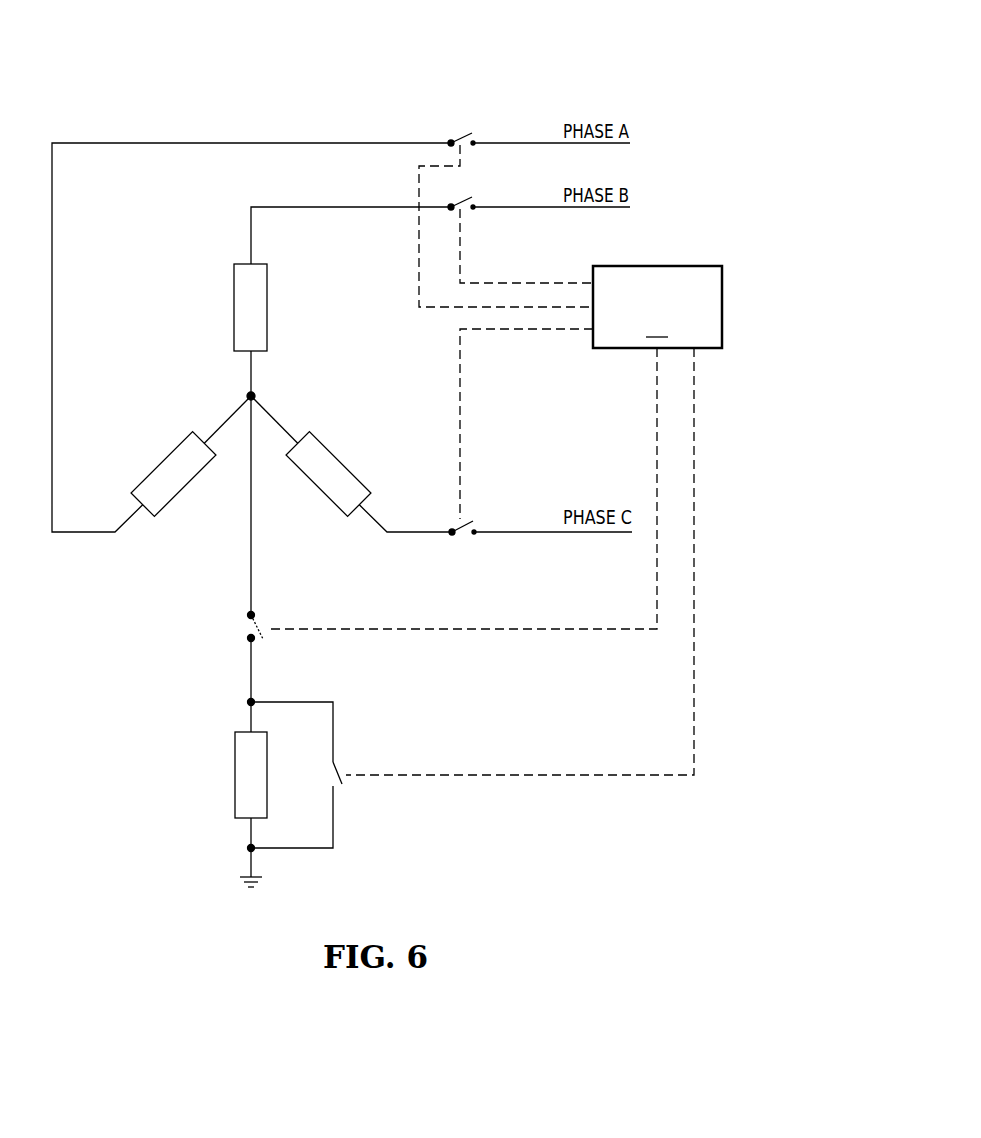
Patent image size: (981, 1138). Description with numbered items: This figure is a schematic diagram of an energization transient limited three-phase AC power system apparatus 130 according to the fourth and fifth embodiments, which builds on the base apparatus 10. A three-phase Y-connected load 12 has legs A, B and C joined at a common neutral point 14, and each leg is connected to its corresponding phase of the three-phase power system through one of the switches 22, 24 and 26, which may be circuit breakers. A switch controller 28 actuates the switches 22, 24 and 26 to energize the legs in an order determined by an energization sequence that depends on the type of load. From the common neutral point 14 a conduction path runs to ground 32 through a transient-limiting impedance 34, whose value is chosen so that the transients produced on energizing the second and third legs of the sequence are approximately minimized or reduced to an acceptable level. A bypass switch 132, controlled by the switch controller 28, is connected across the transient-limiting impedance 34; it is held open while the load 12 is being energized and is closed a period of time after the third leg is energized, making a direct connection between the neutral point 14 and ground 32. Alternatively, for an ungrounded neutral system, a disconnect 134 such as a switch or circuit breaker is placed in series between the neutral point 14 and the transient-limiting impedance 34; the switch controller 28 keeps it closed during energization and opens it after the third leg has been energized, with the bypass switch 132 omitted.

The apparatus 130 is at (580, 50).
The switch 22 is at (471, 124).
The switch 24 is at (471, 188).
The switch 26 is at (472, 512).
The energization transient limited three-phase AC power system apparatus 10 is at (519, 254).
The switch controller 28 is at (494, 460).
The three-phase Y-connected load 12 is at (318, 358).
The common neutral point 14 is at (249, 394).
The disconnect 134 is at (270, 620).
The bypass switch 132 is at (352, 760).
The transient-limiting impedance 34 is at (235, 775).
The ground 32 is at (256, 880).